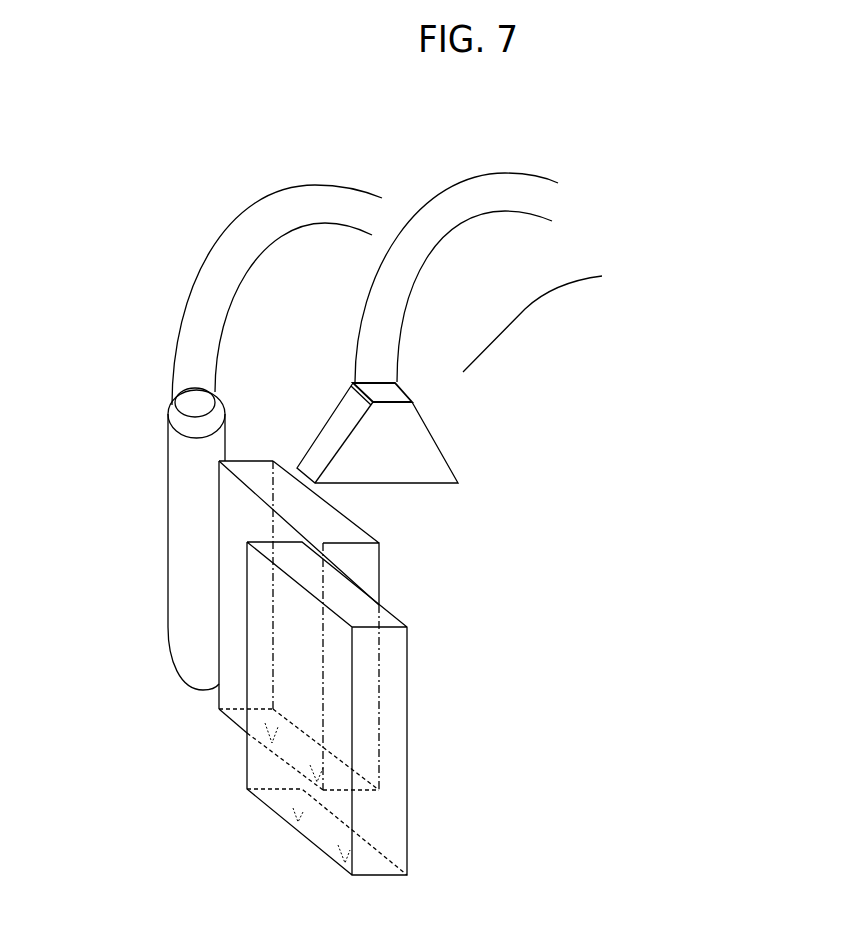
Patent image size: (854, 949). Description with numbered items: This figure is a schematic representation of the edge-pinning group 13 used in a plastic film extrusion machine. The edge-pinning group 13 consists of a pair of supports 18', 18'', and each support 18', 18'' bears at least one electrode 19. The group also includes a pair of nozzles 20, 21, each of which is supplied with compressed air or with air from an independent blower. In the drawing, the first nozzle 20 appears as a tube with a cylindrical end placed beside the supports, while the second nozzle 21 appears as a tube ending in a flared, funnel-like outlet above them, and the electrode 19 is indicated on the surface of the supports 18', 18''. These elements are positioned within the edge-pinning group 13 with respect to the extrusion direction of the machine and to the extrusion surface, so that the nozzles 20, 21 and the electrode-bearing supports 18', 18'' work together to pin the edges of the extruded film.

The edge-pinning group 13 is at (556, 316).
The support 18' is at (355, 625).
The support 18'' is at (227, 708).
The electrode 19 is at (297, 822).
The nozzle 20 is at (182, 457).
The nozzle 21 is at (417, 443).